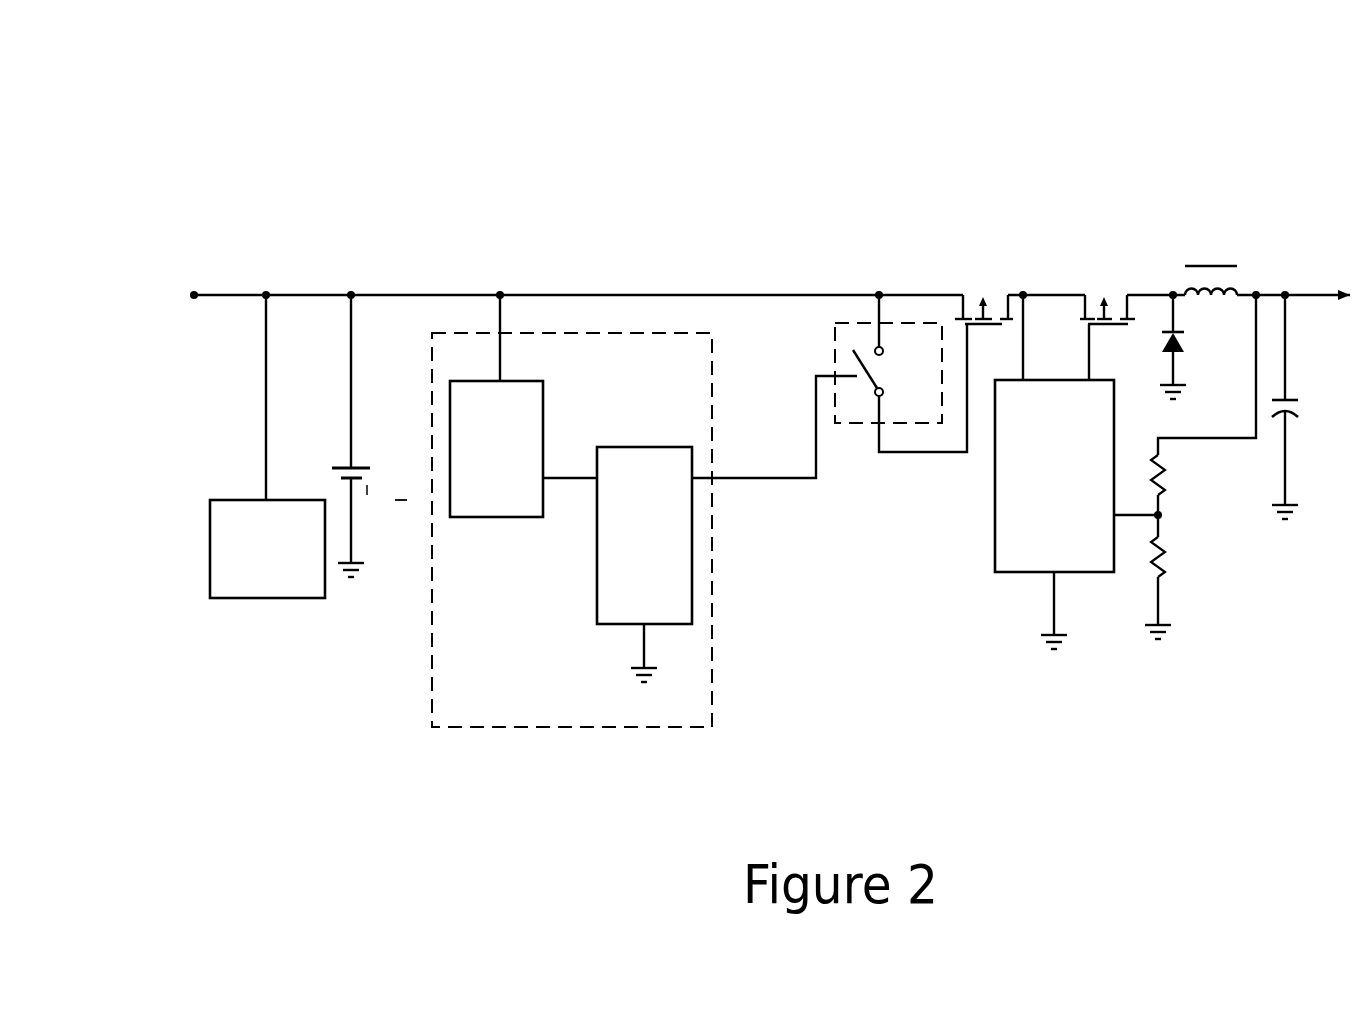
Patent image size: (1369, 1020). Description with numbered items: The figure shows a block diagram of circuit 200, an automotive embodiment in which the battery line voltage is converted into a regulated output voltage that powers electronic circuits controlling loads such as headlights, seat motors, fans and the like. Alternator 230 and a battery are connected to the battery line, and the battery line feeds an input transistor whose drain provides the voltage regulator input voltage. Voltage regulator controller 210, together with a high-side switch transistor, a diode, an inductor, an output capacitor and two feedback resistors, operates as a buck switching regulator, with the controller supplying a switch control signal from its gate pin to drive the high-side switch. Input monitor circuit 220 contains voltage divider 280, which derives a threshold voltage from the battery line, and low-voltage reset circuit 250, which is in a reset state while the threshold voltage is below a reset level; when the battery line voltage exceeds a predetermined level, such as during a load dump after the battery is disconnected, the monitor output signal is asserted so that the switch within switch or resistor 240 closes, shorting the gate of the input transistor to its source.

The circuit 200 is at (818, 103).
The voltage regulator controller 210 is at (1068, 564).
The input monitor circuit 220 is at (695, 369).
The alternator 230 is at (283, 577).
The switch or resistor 240 is at (932, 417).
The low-voltage reset circuit 250 is at (660, 604).
The voltage divider 280 is at (512, 497).